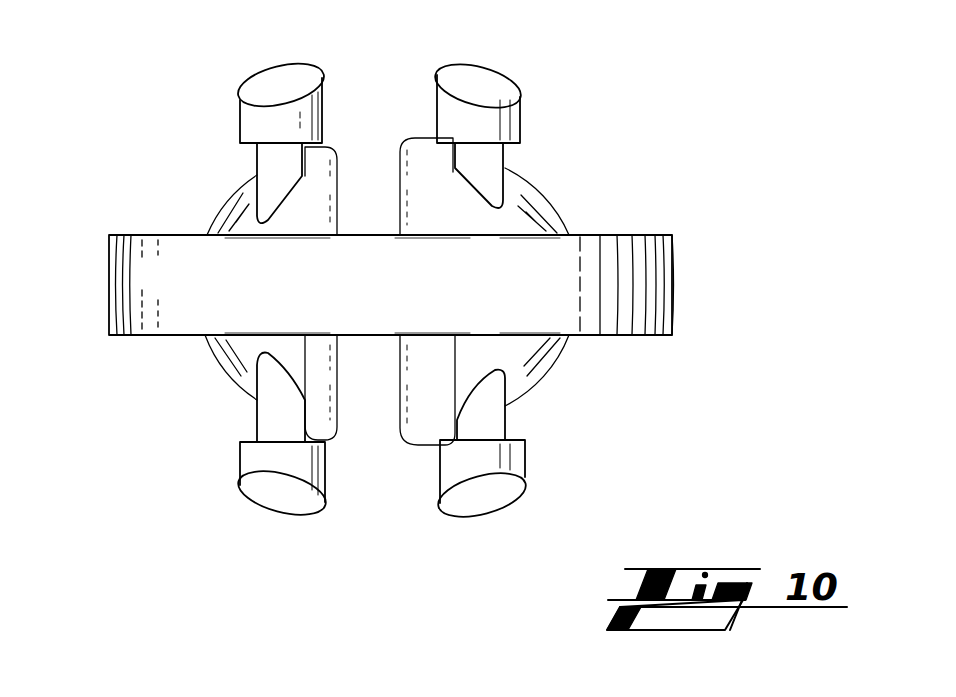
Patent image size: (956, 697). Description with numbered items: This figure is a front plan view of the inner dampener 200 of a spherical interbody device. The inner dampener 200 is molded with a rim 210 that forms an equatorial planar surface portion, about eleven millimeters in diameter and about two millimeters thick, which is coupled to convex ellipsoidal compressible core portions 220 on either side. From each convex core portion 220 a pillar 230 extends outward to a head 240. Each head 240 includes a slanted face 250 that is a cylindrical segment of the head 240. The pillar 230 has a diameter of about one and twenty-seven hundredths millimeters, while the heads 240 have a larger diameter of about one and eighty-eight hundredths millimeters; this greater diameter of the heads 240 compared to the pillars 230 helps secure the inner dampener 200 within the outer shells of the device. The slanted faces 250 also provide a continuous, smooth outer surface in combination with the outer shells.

The inner dampener 200 is at (220, 40).
The rim 210 is at (142, 287).
The convex ellipsoidal compressible core portion 220 is at (516, 203).
The pillar 230 is at (271, 166).
The head 240 is at (507, 122).
The slanted face 250 is at (287, 78).